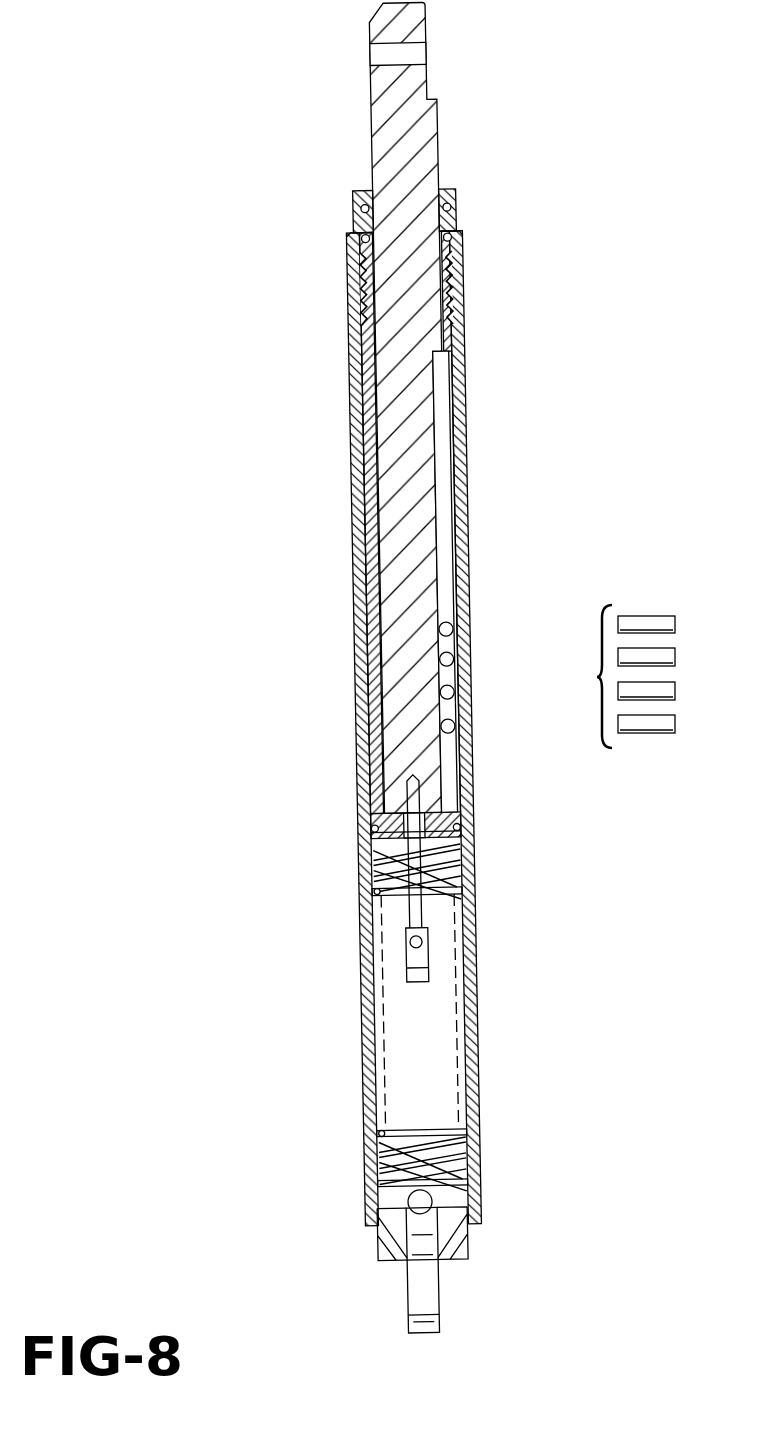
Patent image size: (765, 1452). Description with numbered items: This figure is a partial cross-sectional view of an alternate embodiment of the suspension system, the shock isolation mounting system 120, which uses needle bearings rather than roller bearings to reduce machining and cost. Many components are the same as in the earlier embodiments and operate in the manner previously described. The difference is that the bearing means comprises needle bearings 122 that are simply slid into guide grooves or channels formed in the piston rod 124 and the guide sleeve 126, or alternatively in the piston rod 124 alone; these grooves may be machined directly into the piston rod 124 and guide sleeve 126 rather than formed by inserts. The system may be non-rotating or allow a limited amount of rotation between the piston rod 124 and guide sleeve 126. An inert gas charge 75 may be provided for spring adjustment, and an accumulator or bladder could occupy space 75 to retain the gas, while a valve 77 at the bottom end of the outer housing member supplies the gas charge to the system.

The shock isolation mounting system 120 is at (323, 382).
The needle bearings 122 is at (475, 607).
The piston rod 124 is at (423, 160).
The guide sleeve 126 is at (370, 428).
The inert gas charge 75 is at (443, 1190).
The valve 77 is at (438, 1317).